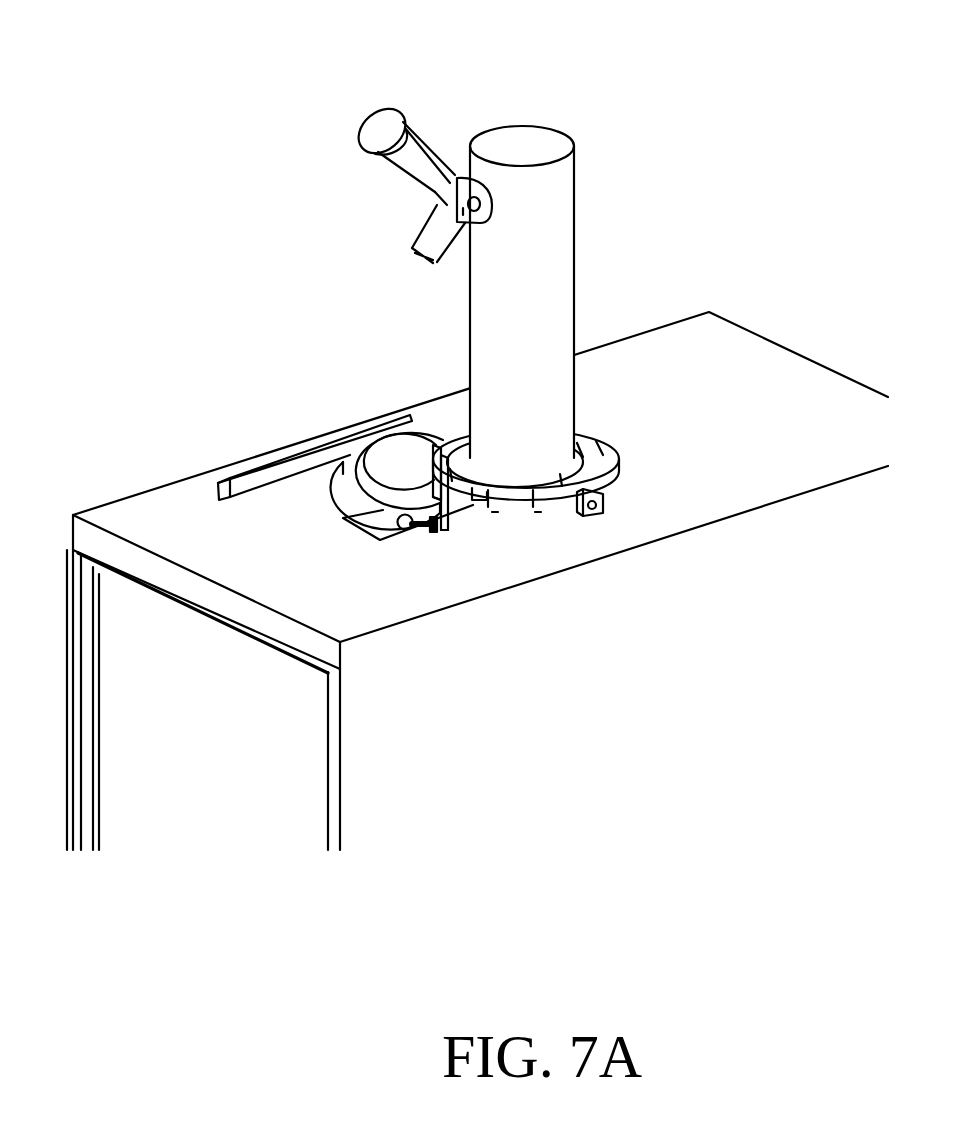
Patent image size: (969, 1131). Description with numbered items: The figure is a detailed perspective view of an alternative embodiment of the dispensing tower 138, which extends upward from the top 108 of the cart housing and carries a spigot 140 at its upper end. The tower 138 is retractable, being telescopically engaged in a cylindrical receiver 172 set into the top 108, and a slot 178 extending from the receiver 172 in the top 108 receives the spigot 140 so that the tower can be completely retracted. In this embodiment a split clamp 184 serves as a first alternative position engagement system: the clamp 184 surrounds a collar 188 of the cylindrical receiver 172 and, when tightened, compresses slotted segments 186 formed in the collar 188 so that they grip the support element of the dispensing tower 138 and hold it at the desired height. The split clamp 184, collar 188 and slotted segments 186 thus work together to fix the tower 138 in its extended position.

The top 108 is at (477, 572).
The dispensing tower 138 is at (611, 284).
The spigot 140 is at (398, 144).
The cylindrical receiver 172 is at (586, 647).
The slot 178 is at (233, 471).
The split clamp 184 is at (601, 368).
The slotted segments 186 is at (581, 578).
The collar 188 is at (661, 549).